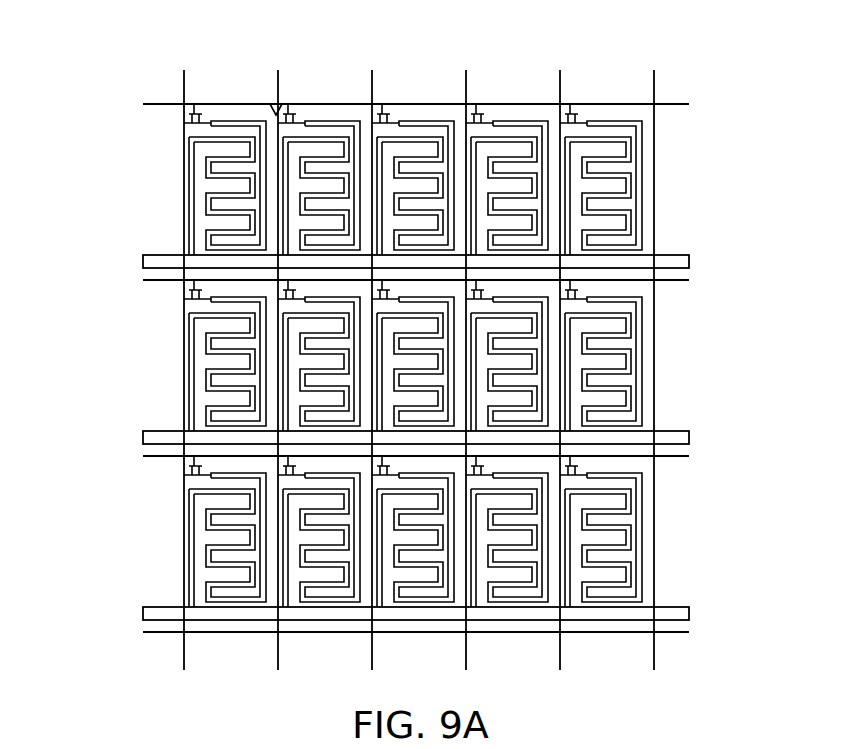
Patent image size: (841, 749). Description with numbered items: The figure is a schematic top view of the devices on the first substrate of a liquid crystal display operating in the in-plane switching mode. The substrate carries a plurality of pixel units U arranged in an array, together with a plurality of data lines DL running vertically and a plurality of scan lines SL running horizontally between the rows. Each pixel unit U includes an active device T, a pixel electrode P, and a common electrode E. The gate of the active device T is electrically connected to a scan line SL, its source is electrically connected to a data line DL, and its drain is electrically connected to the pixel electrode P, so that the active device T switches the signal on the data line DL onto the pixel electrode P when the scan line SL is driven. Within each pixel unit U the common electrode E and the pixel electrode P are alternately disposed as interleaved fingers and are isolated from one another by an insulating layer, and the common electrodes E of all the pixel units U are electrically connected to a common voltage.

The data line DL is at (182, 73).
The scan line SL is at (160, 103).
The active device T is at (197, 102).
The pixel electrode P is at (240, 122).
The common electrode E is at (187, 158).
The pixel unit U is at (279, 108).